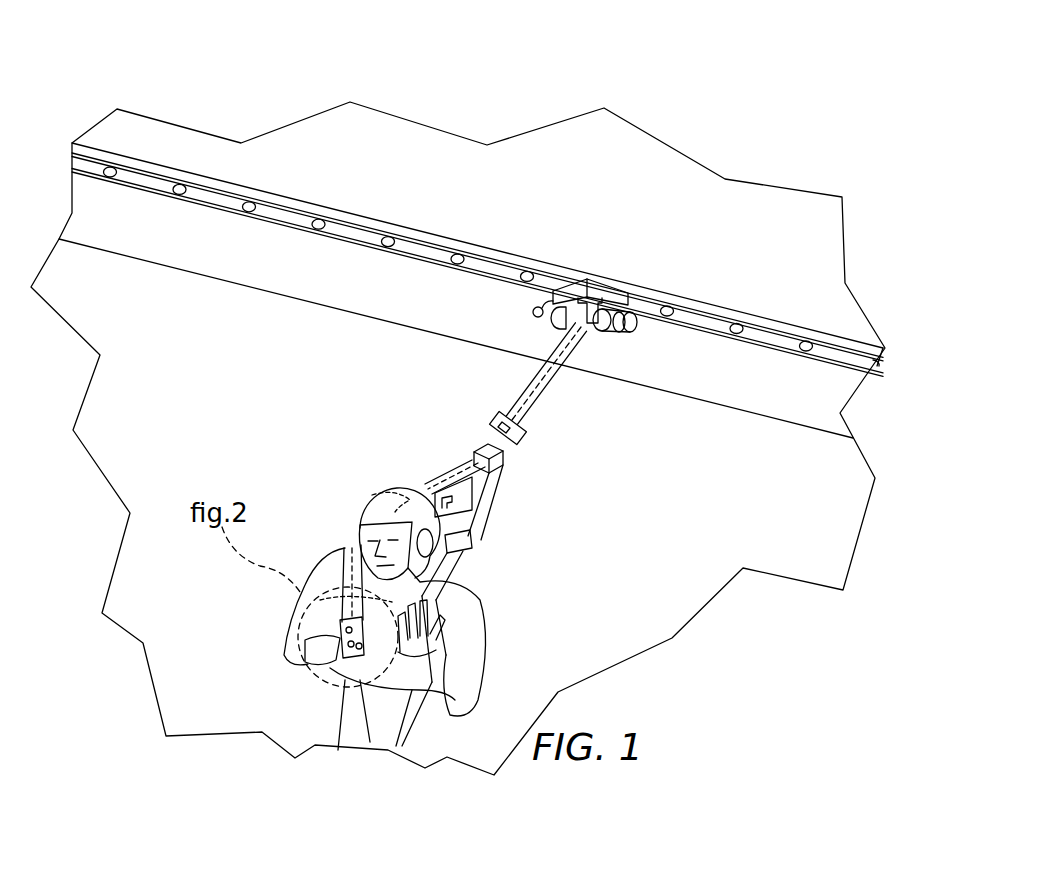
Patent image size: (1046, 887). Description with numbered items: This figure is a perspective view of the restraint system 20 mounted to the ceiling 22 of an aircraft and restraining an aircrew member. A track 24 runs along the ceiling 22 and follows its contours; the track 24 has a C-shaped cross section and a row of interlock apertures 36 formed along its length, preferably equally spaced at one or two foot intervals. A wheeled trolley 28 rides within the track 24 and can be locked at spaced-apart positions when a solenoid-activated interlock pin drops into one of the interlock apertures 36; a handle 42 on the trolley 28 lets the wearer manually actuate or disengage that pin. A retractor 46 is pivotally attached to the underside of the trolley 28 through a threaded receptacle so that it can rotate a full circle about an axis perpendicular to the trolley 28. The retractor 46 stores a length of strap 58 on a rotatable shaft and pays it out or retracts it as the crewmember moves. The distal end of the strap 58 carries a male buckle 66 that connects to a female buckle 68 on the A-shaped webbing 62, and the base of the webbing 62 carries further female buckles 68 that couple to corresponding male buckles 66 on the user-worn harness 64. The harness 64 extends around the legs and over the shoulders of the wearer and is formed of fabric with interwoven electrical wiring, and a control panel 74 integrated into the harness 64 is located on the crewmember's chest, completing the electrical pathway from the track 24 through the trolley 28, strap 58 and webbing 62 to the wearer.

The restraint system 20 is at (812, 125).
The ceiling 22 is at (590, 213).
The track 24 is at (341, 206).
The wheeled trolley 28 is at (610, 296).
The interlock apertures 36 is at (388, 247).
The handle 42 is at (533, 313).
The retractor 46 is at (597, 333).
The strap 58 is at (545, 393).
The A-shaped webbing 62 is at (481, 513).
The harness 64 is at (478, 575).
The male buckle 66 is at (525, 430).
The female buckle 68 is at (503, 464).
The control panel 74 is at (345, 662).